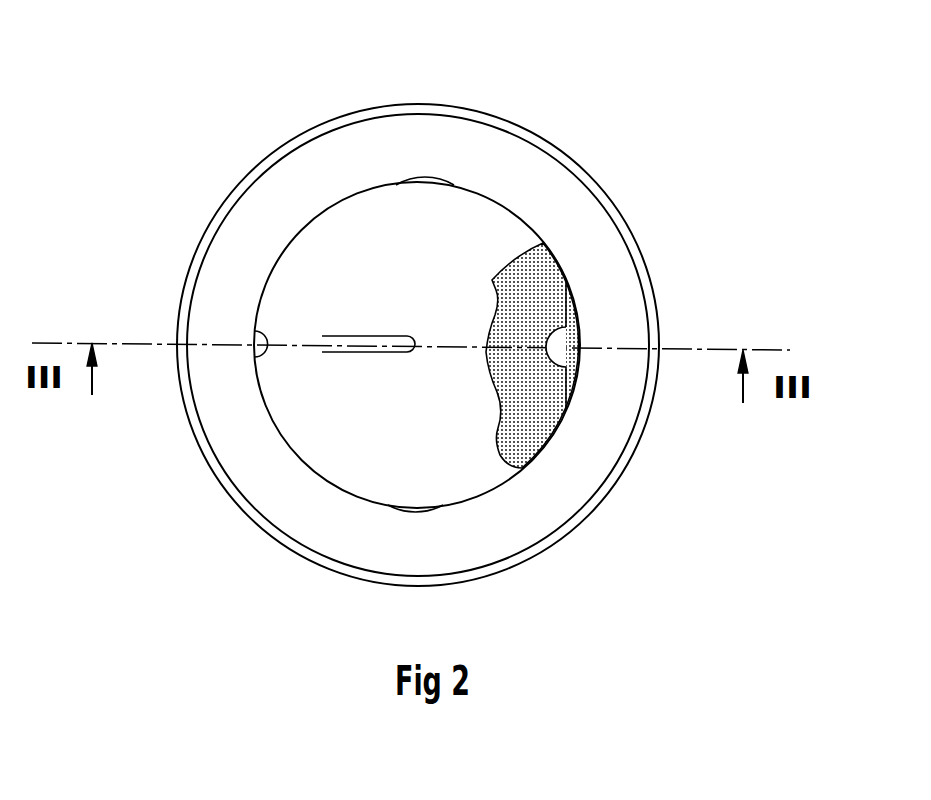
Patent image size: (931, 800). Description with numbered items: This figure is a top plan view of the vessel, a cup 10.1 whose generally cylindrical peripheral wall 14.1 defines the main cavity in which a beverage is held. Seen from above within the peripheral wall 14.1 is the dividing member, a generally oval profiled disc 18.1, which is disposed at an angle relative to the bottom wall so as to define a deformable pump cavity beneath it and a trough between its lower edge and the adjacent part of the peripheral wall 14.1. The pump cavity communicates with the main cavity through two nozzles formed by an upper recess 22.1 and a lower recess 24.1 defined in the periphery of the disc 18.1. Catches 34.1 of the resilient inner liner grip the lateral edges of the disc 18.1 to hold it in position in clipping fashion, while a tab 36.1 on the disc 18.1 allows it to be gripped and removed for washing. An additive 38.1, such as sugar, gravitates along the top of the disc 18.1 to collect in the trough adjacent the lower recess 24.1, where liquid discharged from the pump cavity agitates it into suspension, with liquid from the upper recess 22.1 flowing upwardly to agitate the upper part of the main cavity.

The cup 10.1 is at (180, 122).
The peripheral wall 14.1 is at (645, 262).
The disc 18.1 is at (490, 217).
The upper recess 22.1 is at (232, 343).
The lower recess 24.1 is at (590, 338).
The catches 34.1 is at (424, 190).
The tab 36.1 is at (348, 353).
The additive 38.1 is at (552, 270).